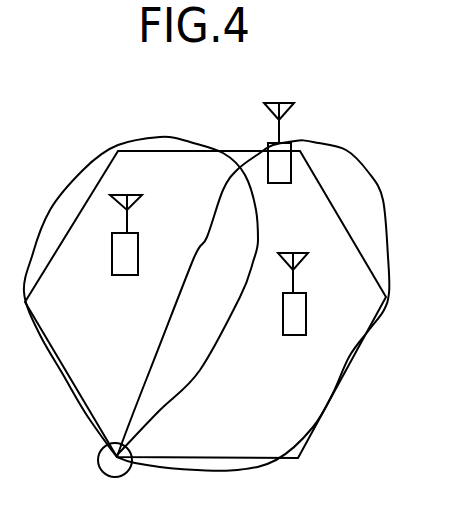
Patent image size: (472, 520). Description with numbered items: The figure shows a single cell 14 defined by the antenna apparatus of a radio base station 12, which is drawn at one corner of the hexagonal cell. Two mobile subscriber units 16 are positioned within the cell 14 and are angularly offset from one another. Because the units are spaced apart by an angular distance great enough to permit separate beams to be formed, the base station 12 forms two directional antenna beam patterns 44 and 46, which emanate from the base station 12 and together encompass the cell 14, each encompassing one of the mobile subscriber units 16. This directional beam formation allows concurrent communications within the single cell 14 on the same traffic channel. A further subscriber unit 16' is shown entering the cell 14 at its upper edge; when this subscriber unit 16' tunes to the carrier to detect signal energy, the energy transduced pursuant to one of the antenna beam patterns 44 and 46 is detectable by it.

The radio base station 12 is at (100, 437).
The cell 14 is at (187, 104).
The mobile subscriber unit 16 is at (218, 296).
The subscriber unit 16' is at (301, 175).
The antenna beam pattern 44 is at (75, 177).
The antenna beam pattern 46 is at (376, 184).